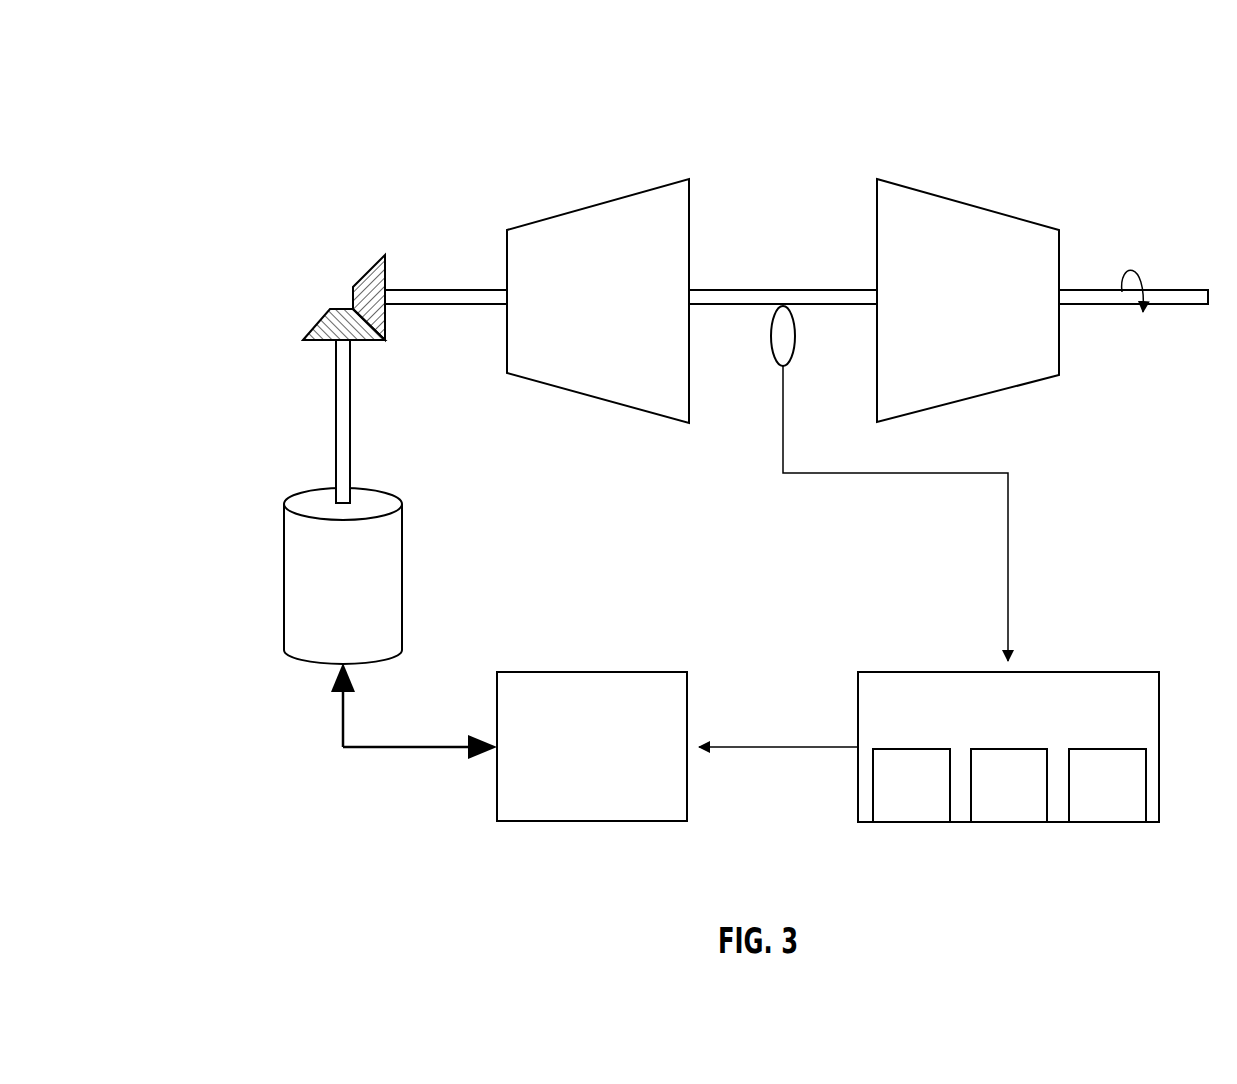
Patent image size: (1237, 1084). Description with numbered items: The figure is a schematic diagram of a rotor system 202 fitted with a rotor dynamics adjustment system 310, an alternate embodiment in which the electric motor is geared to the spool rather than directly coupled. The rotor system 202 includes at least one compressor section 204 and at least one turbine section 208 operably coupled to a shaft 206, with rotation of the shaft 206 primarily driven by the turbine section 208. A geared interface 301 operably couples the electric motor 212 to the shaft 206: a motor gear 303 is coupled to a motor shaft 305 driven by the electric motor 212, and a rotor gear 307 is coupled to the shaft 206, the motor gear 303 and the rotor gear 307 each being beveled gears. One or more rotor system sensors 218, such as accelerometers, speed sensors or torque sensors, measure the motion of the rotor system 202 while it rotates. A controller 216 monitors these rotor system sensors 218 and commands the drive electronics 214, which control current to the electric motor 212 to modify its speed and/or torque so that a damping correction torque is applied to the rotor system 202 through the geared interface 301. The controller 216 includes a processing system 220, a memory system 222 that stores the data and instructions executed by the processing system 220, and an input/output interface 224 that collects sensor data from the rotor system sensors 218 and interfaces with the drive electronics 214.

The rotor system 202 is at (836, 76).
The compressor section 204 is at (600, 205).
The shaft 206 is at (478, 290).
The turbine section 208 is at (968, 205).
The electric motor 212 is at (283, 578).
The drive electronics 214 is at (615, 760).
The controller 216 is at (1033, 718).
The rotor system sensors 218 is at (777, 372).
The processing system 220 is at (935, 800).
The memory system 222 is at (1033, 800).
The input/output interface 224 is at (1130, 800).
The geared interface 301 is at (287, 202).
The motor gear 303 is at (322, 318).
The motor shaft 305 is at (336, 420).
The rotor gear 307 is at (362, 275).
The rotor dynamics adjustment system 310 is at (311, 742).